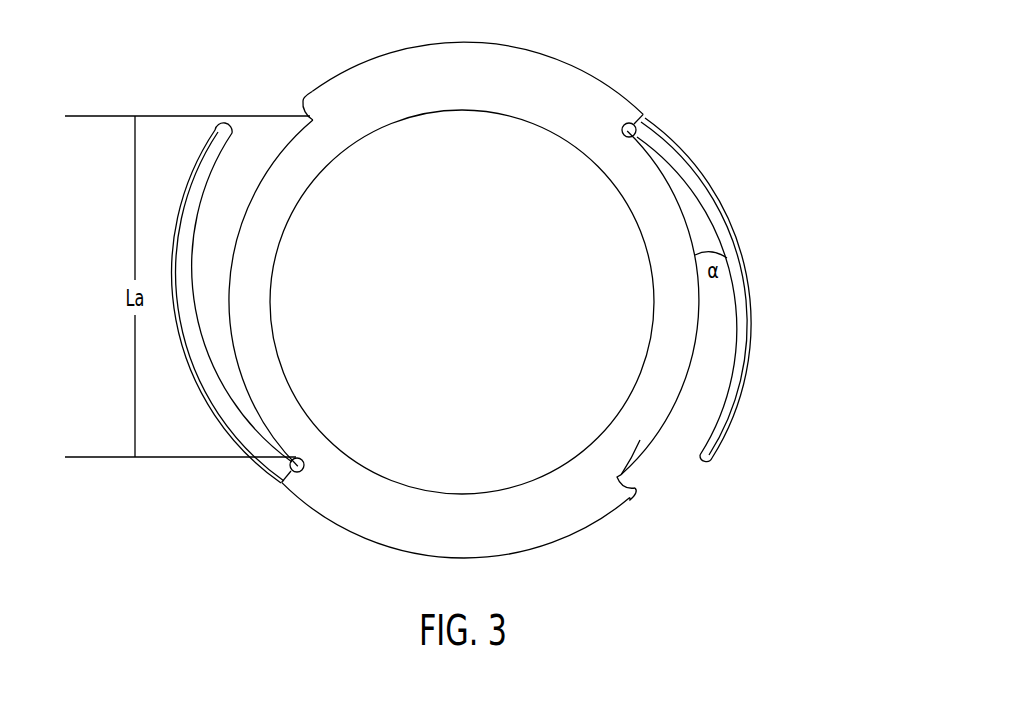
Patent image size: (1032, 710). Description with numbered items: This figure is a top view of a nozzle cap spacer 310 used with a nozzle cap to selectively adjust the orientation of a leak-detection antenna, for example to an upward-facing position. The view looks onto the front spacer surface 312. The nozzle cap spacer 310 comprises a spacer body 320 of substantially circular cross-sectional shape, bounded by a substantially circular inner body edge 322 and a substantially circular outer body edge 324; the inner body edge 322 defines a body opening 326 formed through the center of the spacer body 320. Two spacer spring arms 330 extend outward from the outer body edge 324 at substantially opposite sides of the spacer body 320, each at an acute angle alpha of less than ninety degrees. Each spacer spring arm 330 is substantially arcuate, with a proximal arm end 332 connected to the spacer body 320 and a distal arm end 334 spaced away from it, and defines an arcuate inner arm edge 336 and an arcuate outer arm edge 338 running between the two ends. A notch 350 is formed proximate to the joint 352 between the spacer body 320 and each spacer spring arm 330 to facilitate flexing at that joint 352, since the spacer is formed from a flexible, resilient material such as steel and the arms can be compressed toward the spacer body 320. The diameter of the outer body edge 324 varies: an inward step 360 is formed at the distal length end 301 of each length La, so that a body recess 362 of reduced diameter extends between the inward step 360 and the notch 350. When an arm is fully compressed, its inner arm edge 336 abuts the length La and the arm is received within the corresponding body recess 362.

The distal length end 301 is at (615, 478).
The nozzle cap spacer 310 is at (830, 241).
The front spacer surface 312 is at (568, 520).
The spacer body 320 is at (356, 85).
The inner body edge 322 is at (462, 493).
The outer body edge 324 is at (350, 538).
The body opening 326 is at (500, 161).
The spacer spring arm 330 is at (186, 193).
The proximal arm end 332 is at (648, 131).
The distal arm end 334 is at (716, 465).
The inner arm edge 336 is at (716, 422).
The outer arm edge 338 is at (753, 380).
The notch 350 is at (628, 113).
The joint 352 is at (293, 480).
The inward step 360 is at (630, 494).
The body recess 362 is at (636, 489).